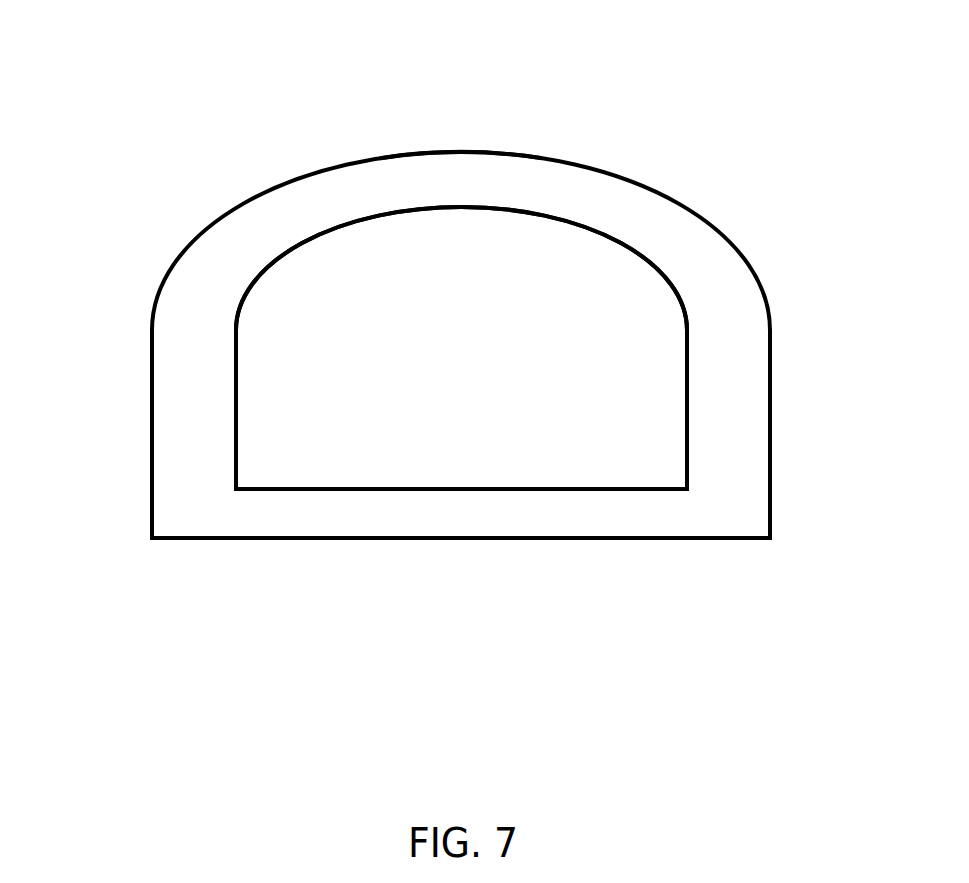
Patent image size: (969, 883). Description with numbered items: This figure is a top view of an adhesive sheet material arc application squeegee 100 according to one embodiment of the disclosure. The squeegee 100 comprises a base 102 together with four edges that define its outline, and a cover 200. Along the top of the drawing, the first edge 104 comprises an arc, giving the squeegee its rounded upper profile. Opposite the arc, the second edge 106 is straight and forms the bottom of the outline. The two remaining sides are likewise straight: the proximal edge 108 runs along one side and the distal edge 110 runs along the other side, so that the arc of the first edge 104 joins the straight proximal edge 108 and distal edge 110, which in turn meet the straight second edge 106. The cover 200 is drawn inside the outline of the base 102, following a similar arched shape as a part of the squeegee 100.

The adhesive sheet material arc application squeegee 100 is at (222, 212).
The base 102 is at (315, 452).
The first edge 104 is at (460, 152).
The second edge 106 is at (457, 538).
The proximal edge 108 is at (771, 443).
The distal edge 110 is at (150, 438).
The cover 200 is at (653, 220).